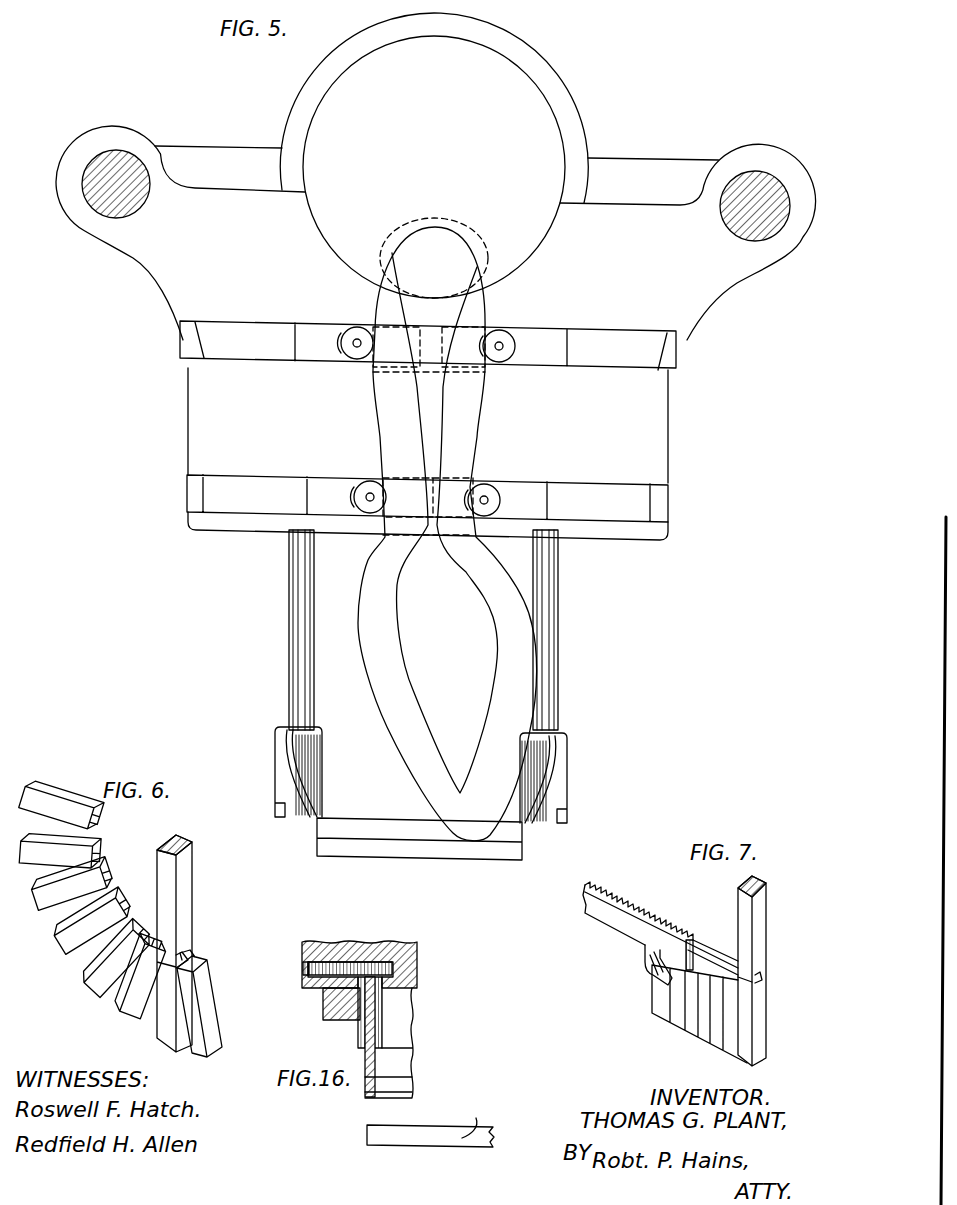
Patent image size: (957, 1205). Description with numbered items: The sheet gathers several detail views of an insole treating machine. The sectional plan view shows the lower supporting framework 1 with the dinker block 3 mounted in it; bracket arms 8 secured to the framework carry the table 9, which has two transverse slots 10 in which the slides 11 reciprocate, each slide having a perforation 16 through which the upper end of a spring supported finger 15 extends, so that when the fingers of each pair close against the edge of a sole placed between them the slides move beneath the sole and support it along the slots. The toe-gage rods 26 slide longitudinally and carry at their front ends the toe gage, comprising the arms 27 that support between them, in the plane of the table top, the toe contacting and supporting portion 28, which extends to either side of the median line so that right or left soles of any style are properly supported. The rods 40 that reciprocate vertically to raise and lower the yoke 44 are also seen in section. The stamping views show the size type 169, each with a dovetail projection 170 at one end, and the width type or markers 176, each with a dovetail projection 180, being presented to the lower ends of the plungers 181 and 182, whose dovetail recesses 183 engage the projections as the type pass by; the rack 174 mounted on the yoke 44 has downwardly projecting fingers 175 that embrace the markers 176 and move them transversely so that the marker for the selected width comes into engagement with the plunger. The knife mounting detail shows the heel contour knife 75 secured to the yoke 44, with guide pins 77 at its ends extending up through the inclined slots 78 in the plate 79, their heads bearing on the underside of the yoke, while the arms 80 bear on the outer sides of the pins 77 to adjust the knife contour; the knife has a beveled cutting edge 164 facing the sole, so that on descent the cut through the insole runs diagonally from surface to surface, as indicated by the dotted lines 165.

In FIG. 5, the dinker block 3 is at (434, 155).
In FIG. 5, the bracket arms 8 is at (135, 258).
In FIG. 5, the table 9 is at (428, 425).
In FIG. 5, the transverse slots 10 is at (428, 421).
In FIG. 5, the slides 11 is at (317, 333).
In FIG. 5, the spring supported finger 15 is at (359, 360).
In FIG. 5, the perforation 16 is at (357, 327).
In FIG. 5, the lower supporting framework 1 is at (447, 529).
In FIG. 5, the toe-gage rods 26 is at (290, 609).
In FIG. 5, the arms 27 is at (303, 826).
In FIG. 5, the toe contacting and supporting portion 28 is at (401, 848).
In FIG. 5, the rods 40 is at (122, 157).
In FIG. 6, the dovetail projection 170 is at (100, 847).
In FIG. 6, the plunger 181 is at (185, 887).
In FIG. 6, the dovetail recesses 183 is at (182, 957).
In FIG. 7, the dovetail recesses 183 is at (758, 977).
In FIG. 6, the type 169 is at (212, 997).
In FIG. 16, the yoke 44 is at (387, 927).
In FIG. 16, the inclined slots 78 is at (305, 977).
In FIG. 16, the plate 79 is at (417, 977).
In FIG. 16, the arms 80 is at (327, 1007).
In FIG. 16, the guide pins 77 is at (382, 1020).
In FIG. 16, the heel contour knife 75 is at (374, 1061).
In FIG. 16, the beveled cutting edge 164 is at (374, 1091).
In FIG. 16, the dotted lines 165 is at (371, 1130).
In FIG. 7, the plunger 182 is at (771, 971).
In FIG. 7, the rack 174 is at (617, 920).
In FIG. 7, the fingers 175 is at (648, 983).
In FIG. 7, the type or markers 176 is at (722, 1060).
In FIG. 7, the dovetail projection 180 is at (758, 980).